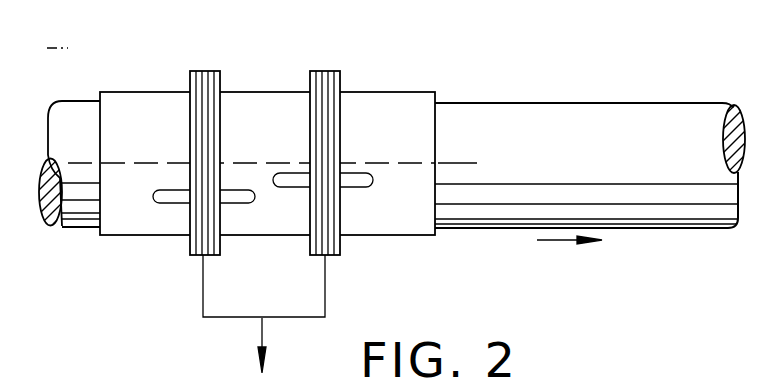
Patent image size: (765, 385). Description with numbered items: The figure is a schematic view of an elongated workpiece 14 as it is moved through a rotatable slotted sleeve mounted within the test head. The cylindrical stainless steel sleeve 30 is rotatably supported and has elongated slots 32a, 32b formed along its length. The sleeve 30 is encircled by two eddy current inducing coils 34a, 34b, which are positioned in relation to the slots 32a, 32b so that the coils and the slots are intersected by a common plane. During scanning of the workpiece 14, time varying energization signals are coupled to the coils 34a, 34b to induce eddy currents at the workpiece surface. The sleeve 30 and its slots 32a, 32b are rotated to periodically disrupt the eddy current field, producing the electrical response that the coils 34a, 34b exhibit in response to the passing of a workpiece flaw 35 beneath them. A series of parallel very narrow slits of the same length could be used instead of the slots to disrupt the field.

The workpiece 14 is at (82, 112).
The sleeve 30 is at (274, 103).
The elongated slot 32a is at (160, 203).
The elongated slot 32b is at (365, 188).
The eddy current inducing coil 34a is at (200, 70).
The eddy current inducing coil 34b is at (325, 70).
The workpiece flaw 35 is at (88, 163).